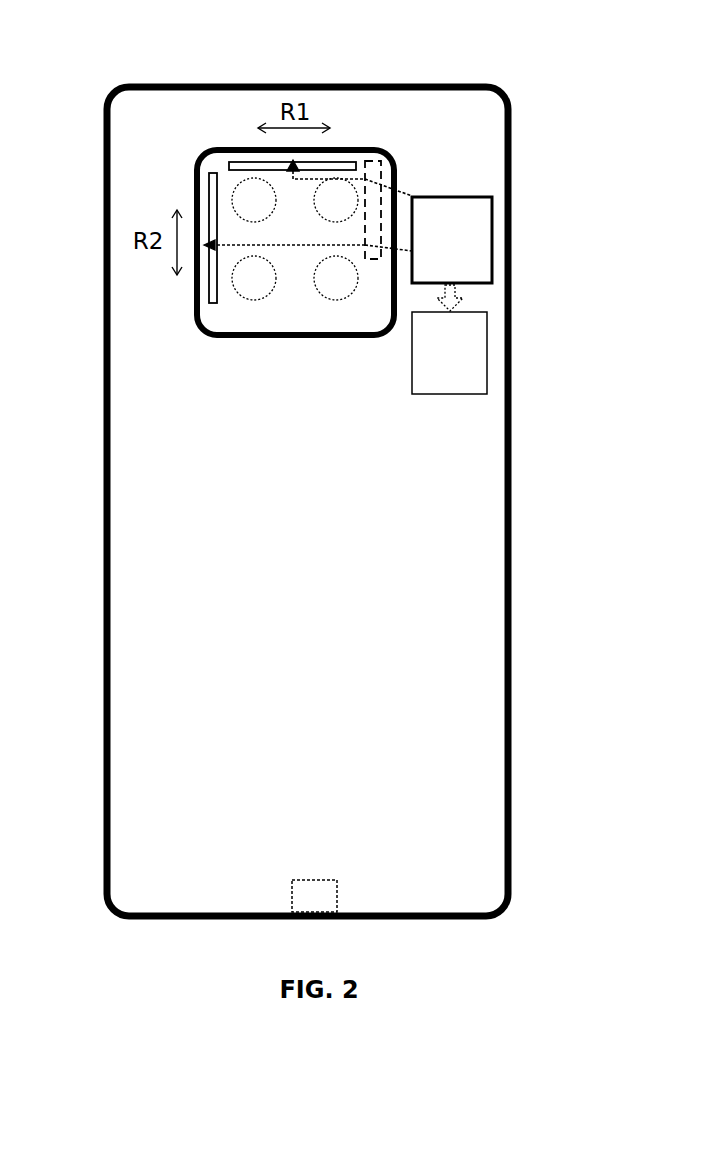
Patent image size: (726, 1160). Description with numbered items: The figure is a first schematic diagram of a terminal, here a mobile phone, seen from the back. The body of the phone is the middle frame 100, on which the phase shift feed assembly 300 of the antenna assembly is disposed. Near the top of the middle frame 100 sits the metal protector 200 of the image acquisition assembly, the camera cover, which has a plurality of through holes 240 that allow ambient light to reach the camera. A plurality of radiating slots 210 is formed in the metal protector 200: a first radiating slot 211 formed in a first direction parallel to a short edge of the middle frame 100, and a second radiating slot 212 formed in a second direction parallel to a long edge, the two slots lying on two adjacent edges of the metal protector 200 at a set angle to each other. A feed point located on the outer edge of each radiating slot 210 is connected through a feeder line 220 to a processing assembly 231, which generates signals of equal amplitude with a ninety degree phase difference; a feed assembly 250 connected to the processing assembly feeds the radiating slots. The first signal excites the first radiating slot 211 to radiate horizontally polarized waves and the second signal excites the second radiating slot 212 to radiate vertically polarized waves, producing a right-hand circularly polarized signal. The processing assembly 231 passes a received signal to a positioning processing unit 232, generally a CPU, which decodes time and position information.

The middle frame 100 is at (460, 585).
The metal protector 200 is at (222, 270).
The radiating slot 210 is at (208, 188).
The first radiating slot 211 is at (343, 162).
The second radiating slot 212 is at (207, 278).
The feeder line 220 is at (410, 193).
The processing assembly 231 is at (475, 250).
The positioning processing unit 232 is at (488, 364).
The through holes 240 is at (254, 282).
The feed assembly 250 is at (372, 262).
The phase shift feed assembly 300 is at (414, 192).